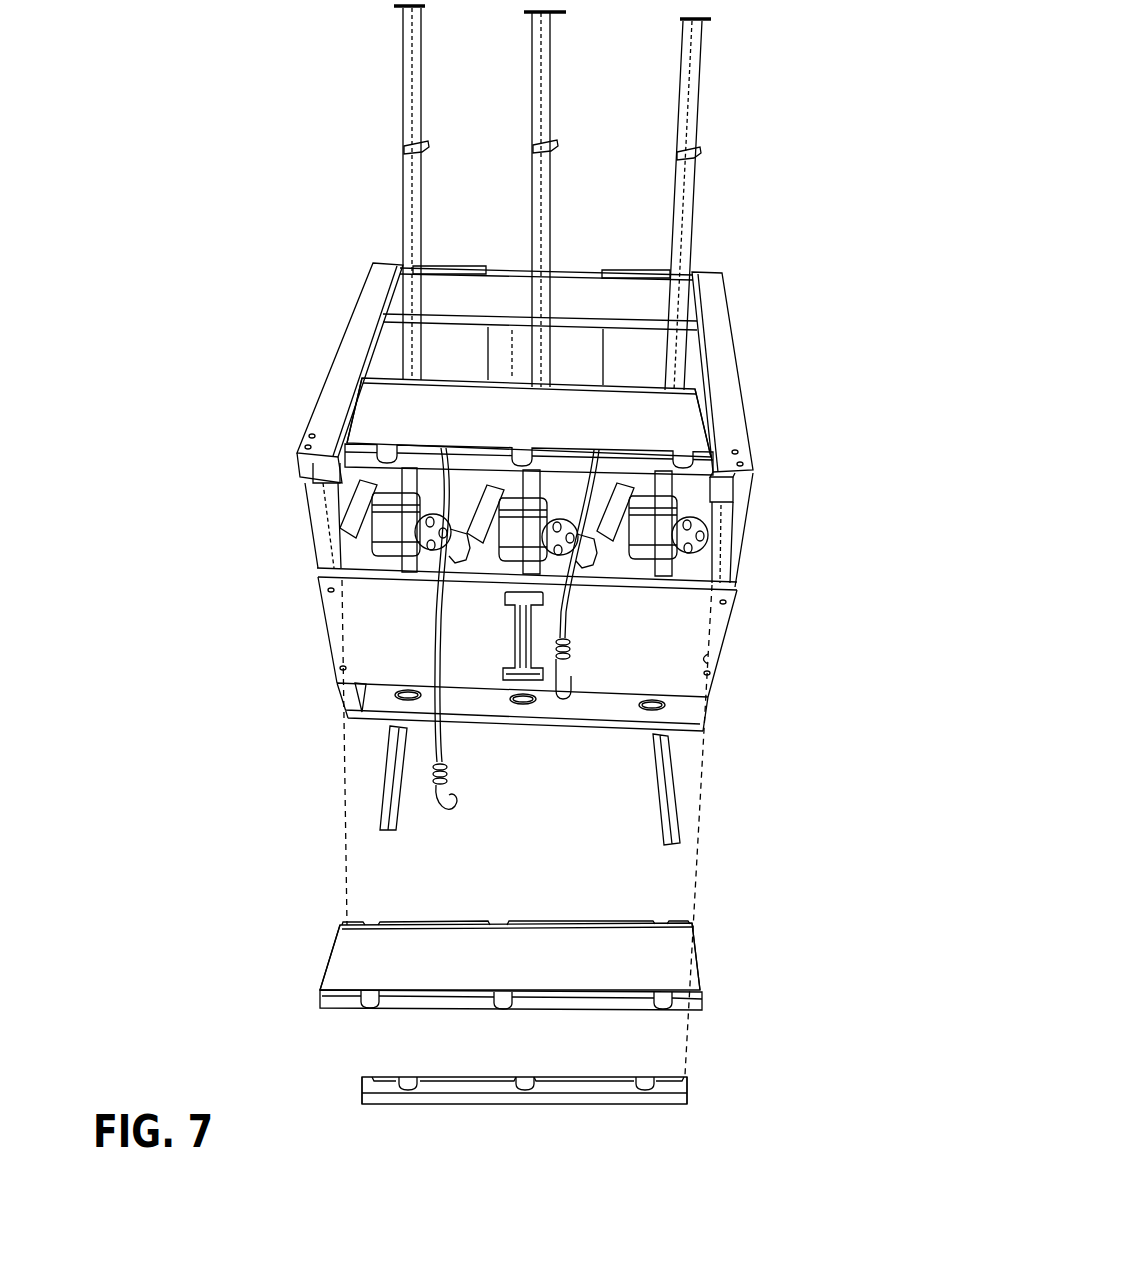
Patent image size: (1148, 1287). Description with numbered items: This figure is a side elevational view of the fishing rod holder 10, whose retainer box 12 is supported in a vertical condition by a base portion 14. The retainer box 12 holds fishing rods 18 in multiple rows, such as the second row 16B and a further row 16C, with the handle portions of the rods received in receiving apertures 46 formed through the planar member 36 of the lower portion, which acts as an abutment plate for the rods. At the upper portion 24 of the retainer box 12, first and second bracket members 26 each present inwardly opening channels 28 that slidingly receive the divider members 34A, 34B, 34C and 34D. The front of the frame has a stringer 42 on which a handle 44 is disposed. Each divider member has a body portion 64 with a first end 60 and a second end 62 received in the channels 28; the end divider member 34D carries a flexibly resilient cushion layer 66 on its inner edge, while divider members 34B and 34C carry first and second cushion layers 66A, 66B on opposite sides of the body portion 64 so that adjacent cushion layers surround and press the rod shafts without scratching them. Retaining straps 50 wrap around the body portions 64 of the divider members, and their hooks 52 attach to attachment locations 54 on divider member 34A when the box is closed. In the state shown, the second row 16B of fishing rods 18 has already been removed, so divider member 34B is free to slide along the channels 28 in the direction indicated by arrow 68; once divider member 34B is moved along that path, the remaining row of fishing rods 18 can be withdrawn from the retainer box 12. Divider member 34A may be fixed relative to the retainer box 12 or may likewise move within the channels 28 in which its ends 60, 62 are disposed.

The fishing rod holder 10 is at (735, 225).
The retainer box 12 is at (255, 580).
The base portion 14 is at (336, 767).
The second row of fishing rods 16B is at (338, 432).
The third row of fishing rods 16C is at (393, 313).
The fishing rods 18 is at (753, 100).
The upper portion 24 is at (745, 281).
The bracket members 26 is at (352, 348).
The inwardly opening channels 28 is at (384, 421).
The divider member 34A is at (574, 297).
The divider member 34B is at (627, 393).
The divider member 34C is at (705, 950).
The end divider member 34D is at (699, 1102).
The planar member 36 is at (573, 750).
The stringer 42 is at (707, 665).
The handle 44 is at (512, 680).
The receiving apertures 46 is at (400, 697).
The retaining straps 50 is at (505, 612).
The hooks 52 is at (437, 812).
The attachment locations 54 is at (476, 265).
The first end 60 is at (353, 407).
The second end 62 is at (715, 422).
The body portion 64 is at (350, 453).
The flexibly resilient cushion layer 66 is at (672, 1080).
The first flexibly resilient cushion layer 66A is at (690, 384).
The second flexibly resilient cushion layer 66B is at (687, 343).
The arrow 68 is at (873, 366).